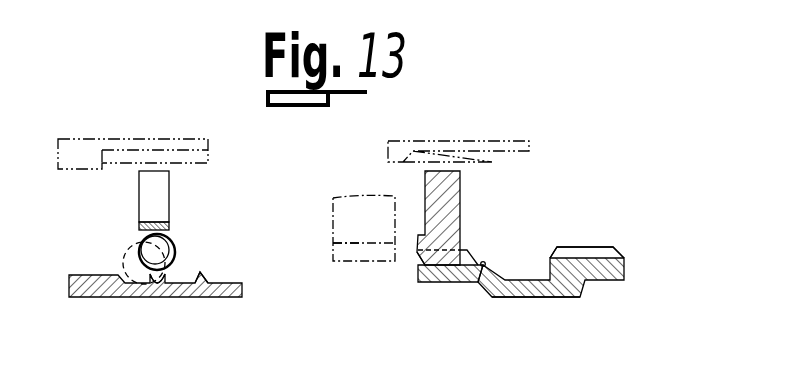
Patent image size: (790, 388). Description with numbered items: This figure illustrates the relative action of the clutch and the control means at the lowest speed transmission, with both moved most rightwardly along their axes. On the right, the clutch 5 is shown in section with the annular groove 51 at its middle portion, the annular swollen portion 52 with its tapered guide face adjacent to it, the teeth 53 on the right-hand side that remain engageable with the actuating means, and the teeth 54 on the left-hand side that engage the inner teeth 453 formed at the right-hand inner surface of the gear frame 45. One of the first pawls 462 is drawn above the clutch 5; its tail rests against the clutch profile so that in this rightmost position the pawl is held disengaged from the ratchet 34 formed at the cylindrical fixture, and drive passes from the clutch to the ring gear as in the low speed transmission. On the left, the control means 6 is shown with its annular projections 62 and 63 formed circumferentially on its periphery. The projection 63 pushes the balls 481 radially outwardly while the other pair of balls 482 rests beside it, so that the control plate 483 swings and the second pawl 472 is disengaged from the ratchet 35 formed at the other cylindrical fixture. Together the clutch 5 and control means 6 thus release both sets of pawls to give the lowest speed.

The ratchet 35 is at (182, 155).
The second pawls 472 is at (167, 186).
The control plates 483 is at (170, 228).
The balls 481 is at (177, 252).
The balls 482 is at (123, 259).
The control means 6 is at (239, 283).
The annular projection 63 is at (168, 298).
The annular projection 62 is at (208, 298).
The ratchet 34 is at (495, 158).
The gear frame 45 is at (342, 218).
The inner teeth 453 is at (340, 243).
The first pawls 462 is at (461, 190).
The annular swollen portion 52 is at (480, 285).
The clutch 5 is at (558, 250).
The teeth 53 is at (600, 252).
The annular groove 51 is at (533, 298).
The teeth 54 is at (415, 253).